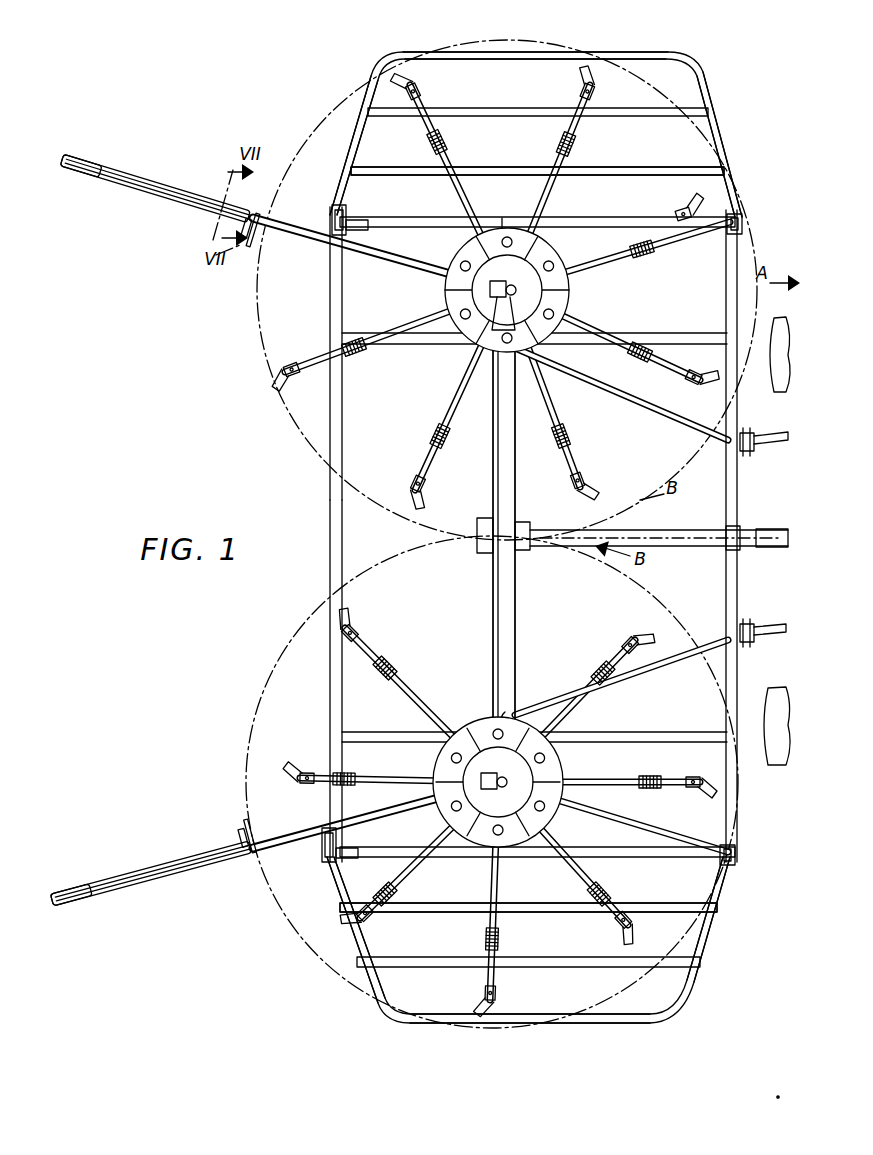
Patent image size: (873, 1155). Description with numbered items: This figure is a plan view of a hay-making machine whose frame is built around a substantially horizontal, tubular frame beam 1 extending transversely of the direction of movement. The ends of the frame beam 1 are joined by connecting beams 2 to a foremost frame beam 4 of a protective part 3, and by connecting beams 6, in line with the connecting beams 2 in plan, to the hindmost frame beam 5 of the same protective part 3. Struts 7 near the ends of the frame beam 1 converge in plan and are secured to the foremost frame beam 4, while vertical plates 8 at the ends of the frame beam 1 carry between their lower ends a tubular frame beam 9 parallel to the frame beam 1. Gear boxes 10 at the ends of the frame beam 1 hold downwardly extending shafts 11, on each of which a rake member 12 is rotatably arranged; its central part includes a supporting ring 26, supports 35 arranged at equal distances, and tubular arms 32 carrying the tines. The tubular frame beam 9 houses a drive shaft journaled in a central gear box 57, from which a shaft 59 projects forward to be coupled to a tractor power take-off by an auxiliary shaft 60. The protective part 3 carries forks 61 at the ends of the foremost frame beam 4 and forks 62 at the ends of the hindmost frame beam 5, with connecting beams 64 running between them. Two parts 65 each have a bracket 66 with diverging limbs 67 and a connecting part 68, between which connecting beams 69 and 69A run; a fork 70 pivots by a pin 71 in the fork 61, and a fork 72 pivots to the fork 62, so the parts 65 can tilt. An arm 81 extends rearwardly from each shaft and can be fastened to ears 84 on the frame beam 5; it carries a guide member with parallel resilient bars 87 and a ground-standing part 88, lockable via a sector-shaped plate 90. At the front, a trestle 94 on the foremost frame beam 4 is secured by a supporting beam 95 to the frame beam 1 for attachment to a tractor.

The frame beam 1 is at (494, 470).
The connecting beams 2 is at (662, 330).
The protective part 3 is at (329, 494).
The foremost frame beam 4 is at (740, 428).
The frame beam 5 is at (329, 530).
The connecting beams 6 is at (420, 344).
The struts 7 is at (662, 415).
The vertical plates 8 is at (493, 362).
The tubular frame beam 9 is at (493, 422).
The gear boxes 10 is at (503, 216).
The shafts 11 is at (549, 283).
The rake member 12 is at (262, 348).
The supporting ring 26 is at (440, 294).
The tubular arm 32 is at (624, 257).
The supports 35 is at (542, 260).
The gear box 57 is at (472, 552).
The shaft 59 is at (527, 523).
The auxiliary shaft 60 is at (655, 530).
The fork 61 is at (725, 235).
The fork 62 is at (350, 217).
The connecting beams 64 is at (566, 216).
The parts 65 is at (493, 143).
The bracket 66 is at (514, 50).
The limbs 67 is at (354, 150).
The connecting part 68 is at (563, 60).
The connecting beam 69 is at (466, 108).
The connecting beam 69A is at (603, 166).
The fork 70 is at (742, 215).
The pin 71 is at (743, 226).
The fork 72 is at (346, 210).
The arm 81 is at (405, 264).
The ears 84 is at (323, 258).
The resilient bars 87 is at (107, 180).
The part 88 is at (170, 195).
The sector-shaped plate 90 is at (256, 246).
The trestle 94 is at (741, 508).
The supporting beam 95 is at (718, 545).